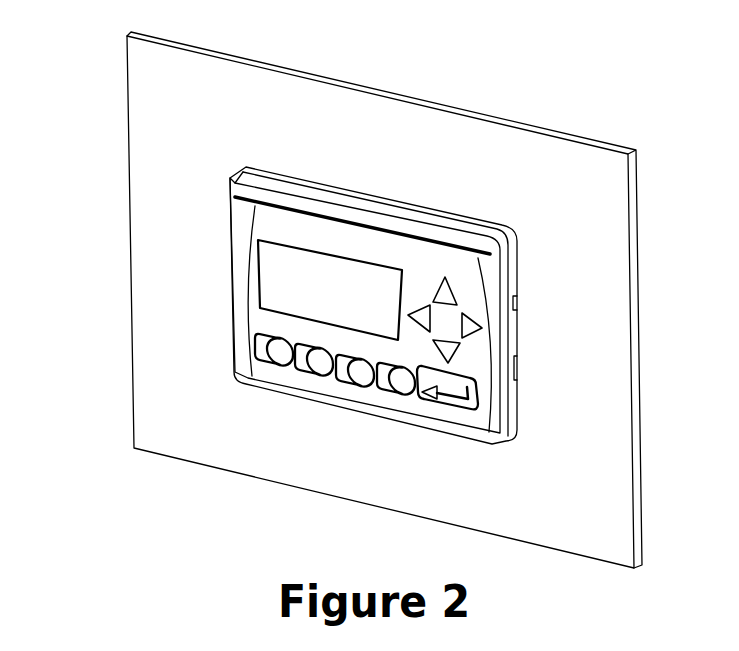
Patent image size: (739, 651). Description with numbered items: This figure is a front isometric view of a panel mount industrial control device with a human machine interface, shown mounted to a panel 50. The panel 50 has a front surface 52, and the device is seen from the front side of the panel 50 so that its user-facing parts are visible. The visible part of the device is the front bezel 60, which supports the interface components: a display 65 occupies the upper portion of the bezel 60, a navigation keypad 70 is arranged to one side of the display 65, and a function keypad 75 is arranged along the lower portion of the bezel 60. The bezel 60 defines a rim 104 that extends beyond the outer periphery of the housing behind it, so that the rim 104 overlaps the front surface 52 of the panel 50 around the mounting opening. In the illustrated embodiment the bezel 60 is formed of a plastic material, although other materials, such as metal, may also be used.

The panel 50 is at (345, 288).
The front surface 52 is at (152, 315).
The front bezel 60 is at (378, 281).
The display 65 is at (267, 285).
The navigation keypad 70 is at (478, 328).
The function keypad 75 is at (354, 385).
The rim 104 is at (458, 233).